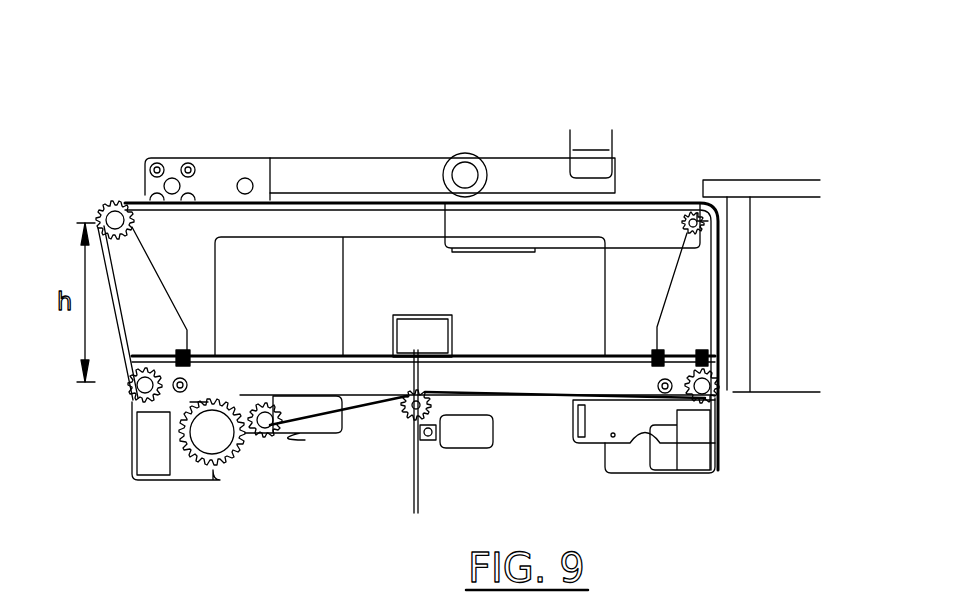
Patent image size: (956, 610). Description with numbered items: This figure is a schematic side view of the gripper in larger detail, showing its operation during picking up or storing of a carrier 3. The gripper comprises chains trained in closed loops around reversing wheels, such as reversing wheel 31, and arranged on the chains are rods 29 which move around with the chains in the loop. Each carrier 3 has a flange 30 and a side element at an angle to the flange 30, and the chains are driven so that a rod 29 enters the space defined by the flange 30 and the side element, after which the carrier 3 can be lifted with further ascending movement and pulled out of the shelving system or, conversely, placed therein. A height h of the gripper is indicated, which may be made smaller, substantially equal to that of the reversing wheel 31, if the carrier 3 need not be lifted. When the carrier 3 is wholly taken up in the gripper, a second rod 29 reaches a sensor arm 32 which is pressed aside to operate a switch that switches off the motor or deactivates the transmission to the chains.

The rod 29 is at (390, 202).
The flange 30 is at (703, 193).
The reversing wheel 31 is at (688, 213).
The sensor arm 32 is at (414, 358).
The carrier 3 is at (778, 380).